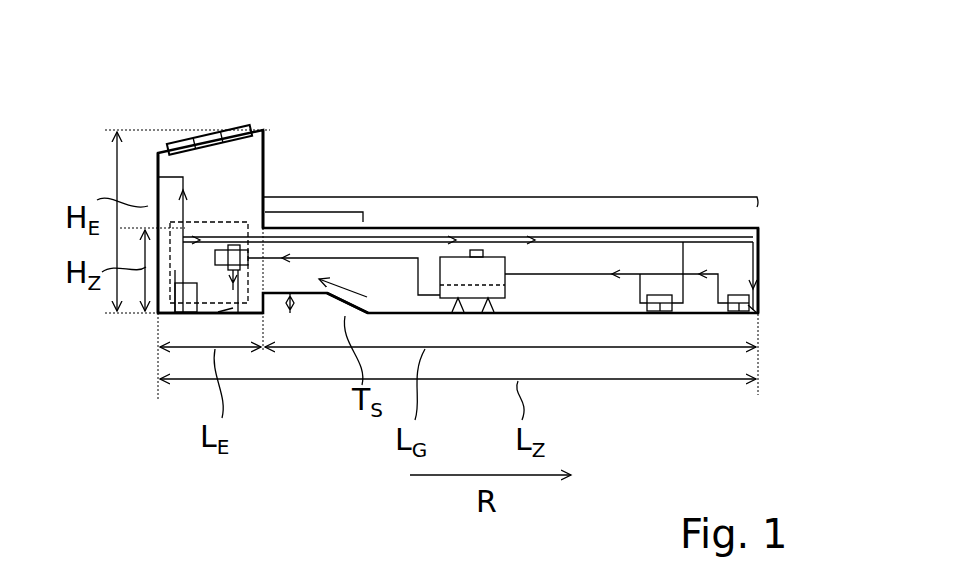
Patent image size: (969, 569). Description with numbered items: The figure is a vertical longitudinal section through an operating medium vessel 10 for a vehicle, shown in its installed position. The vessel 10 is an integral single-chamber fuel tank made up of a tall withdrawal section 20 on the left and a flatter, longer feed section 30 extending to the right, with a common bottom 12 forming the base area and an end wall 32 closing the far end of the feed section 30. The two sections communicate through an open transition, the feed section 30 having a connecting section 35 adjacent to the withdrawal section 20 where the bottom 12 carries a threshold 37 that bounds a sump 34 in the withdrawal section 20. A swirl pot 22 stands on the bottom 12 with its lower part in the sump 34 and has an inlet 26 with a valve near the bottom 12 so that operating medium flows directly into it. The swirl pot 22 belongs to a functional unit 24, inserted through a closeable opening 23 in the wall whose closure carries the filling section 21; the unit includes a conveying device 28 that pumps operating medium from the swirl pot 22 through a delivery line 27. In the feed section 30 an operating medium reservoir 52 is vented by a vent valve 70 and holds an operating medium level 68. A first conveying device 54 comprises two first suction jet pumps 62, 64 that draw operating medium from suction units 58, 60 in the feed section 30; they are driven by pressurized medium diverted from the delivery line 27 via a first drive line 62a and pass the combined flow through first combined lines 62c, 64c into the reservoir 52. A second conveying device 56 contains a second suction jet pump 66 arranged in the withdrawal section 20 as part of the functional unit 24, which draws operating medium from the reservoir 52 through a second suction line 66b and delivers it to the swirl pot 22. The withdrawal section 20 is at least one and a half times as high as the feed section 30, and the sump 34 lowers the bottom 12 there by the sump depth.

The operating medium vessel 10 is at (648, 85).
The bottom 12 is at (645, 314).
The withdrawal section 20 is at (157, 117).
The filling section 21 is at (200, 135).
The swirl pot 22 is at (175, 293).
The opening 23 is at (163, 152).
The functional unit 24 is at (268, 128).
The inlet 26 is at (230, 313).
The delivery line 27 is at (183, 255).
The conveying device 28 is at (192, 313).
The feed section 30 is at (417, 197).
The end wall 32 is at (762, 258).
The sump 34 is at (288, 318).
The connecting section 35 is at (352, 211).
The threshold 37 is at (345, 313).
The operating medium reservoir 52 is at (477, 250).
The first conveying device 54 is at (594, 187).
The second conveying device 56 is at (365, 297).
The suction unit 58 is at (748, 318).
The suction unit 60 is at (668, 314).
The first suction jet pump 62 is at (738, 295).
The first drive line 62a is at (718, 270).
The first combined line 62c is at (700, 290).
The first suction jet pump 64 is at (661, 295).
The first combined line 64c is at (615, 290).
The second suction jet pump 66 is at (207, 222).
The second suction line 66b is at (380, 258).
The operating medium level 68 is at (472, 316).
The vent valve 70 is at (453, 257).